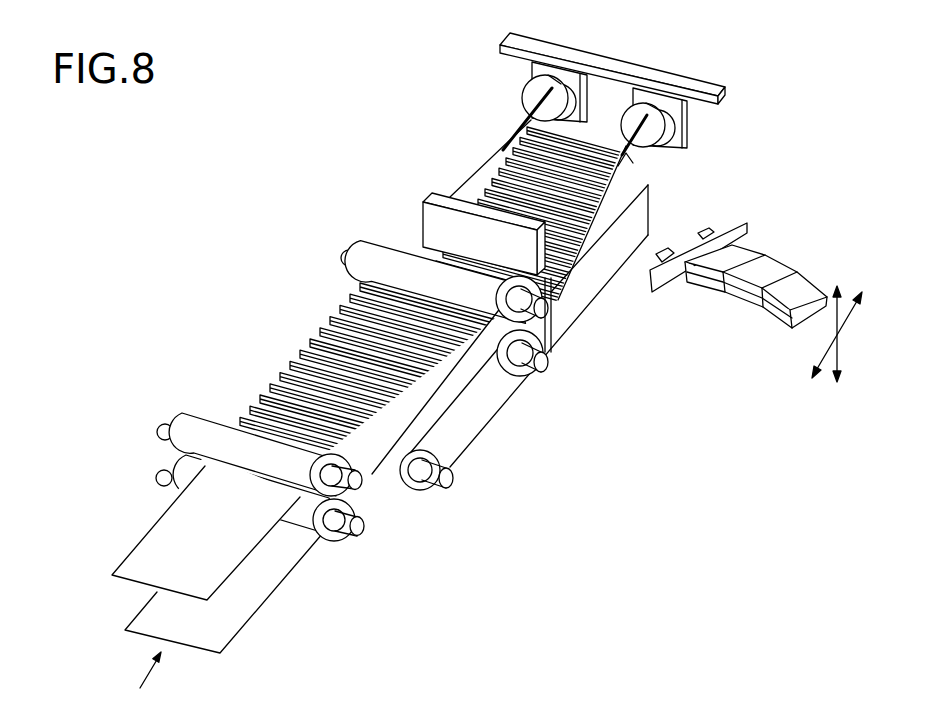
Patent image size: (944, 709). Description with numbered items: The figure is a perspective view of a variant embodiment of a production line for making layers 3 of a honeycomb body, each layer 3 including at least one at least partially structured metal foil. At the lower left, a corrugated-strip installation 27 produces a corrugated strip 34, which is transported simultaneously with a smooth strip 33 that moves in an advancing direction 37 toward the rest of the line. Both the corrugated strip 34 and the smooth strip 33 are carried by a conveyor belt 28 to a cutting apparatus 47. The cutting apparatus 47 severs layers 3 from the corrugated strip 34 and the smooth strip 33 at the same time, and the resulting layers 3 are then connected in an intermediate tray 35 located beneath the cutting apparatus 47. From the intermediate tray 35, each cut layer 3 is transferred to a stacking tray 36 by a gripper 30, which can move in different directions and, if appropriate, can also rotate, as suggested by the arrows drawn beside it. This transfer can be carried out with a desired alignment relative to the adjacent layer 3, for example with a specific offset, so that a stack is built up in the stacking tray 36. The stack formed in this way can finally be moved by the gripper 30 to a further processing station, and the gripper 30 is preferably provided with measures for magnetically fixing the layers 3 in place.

The layer 3 is at (519, 127).
The intermediate tray 35 is at (507, 140).
The cutting apparatus 47 is at (423, 212).
The stacking tray 36 is at (570, 333).
The conveyor belt 28 is at (458, 447).
The corrugated-strip installation 27 is at (210, 500).
The corrugated strip 34 is at (187, 533).
The smooth strip 33 is at (228, 623).
The advancing direction 37 is at (148, 679).
The gripper 30 is at (768, 262).